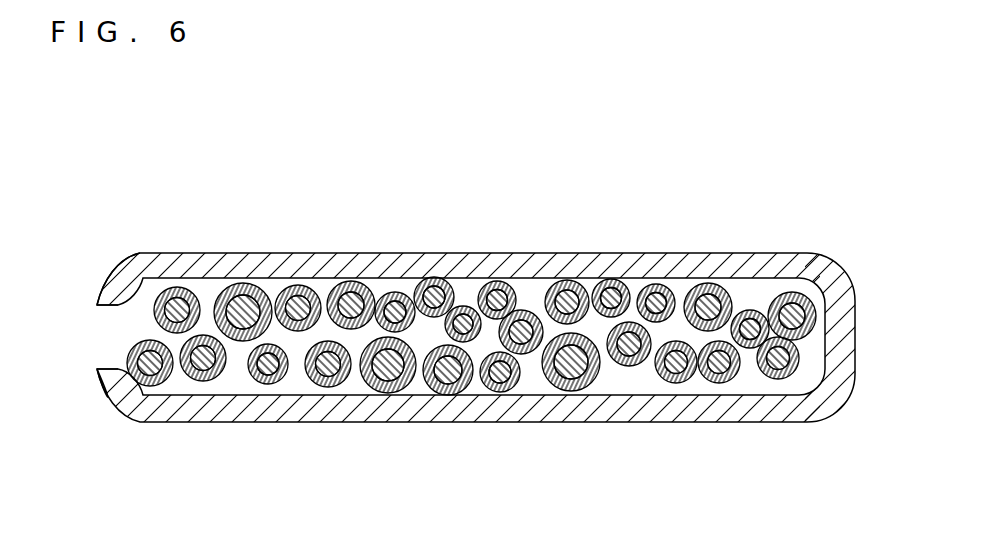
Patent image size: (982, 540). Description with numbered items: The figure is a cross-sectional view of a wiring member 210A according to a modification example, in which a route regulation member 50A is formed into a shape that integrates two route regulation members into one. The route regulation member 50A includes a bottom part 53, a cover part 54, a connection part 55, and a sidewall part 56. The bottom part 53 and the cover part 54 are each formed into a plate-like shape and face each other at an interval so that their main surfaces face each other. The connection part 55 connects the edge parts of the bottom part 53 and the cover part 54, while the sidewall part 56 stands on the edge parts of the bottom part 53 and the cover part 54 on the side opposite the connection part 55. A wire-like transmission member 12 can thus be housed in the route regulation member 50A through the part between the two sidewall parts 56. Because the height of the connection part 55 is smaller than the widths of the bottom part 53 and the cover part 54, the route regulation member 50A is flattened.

The wiring member 210A is at (136, 135).
The wire-like transmission member 12 is at (408, 293).
The route regulation member 50A is at (539, 243).
The bottom part 53 is at (483, 408).
The cover part 54 is at (487, 268).
The connection part 55 is at (847, 334).
The sidewall part 56 is at (98, 306).